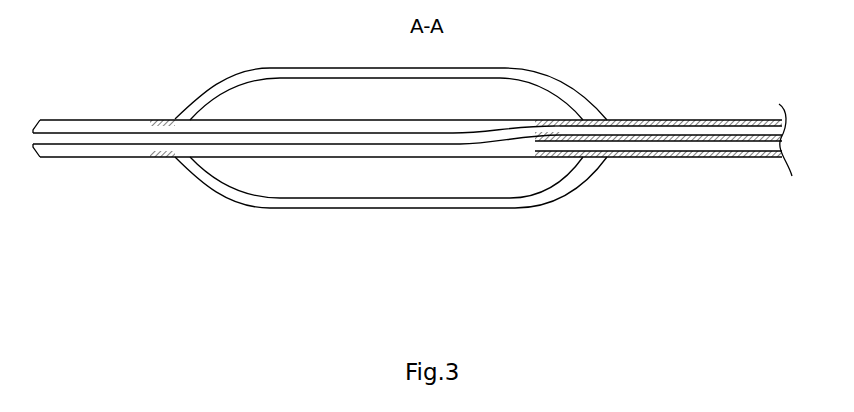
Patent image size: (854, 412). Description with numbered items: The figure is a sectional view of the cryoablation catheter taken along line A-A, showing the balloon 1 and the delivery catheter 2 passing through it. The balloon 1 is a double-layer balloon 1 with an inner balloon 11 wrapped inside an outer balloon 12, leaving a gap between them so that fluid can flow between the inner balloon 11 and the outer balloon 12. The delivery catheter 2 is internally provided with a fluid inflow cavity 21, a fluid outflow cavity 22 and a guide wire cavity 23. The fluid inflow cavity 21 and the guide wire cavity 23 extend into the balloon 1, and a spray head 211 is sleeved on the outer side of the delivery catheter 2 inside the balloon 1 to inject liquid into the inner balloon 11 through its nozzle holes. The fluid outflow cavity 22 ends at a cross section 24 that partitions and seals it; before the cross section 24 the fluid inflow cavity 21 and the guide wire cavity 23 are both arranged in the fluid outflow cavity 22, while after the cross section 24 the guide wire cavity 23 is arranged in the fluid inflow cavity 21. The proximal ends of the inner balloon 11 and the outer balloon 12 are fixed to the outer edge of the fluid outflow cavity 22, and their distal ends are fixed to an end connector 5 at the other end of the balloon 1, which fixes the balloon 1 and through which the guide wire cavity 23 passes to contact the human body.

The balloon 1 is at (391, 198).
The inner balloon 11 is at (300, 200).
The outer balloon 12 is at (222, 200).
The delivery catheter 2 is at (426, 219).
The fluid inflow cavity 21 is at (372, 158).
The spray head 211 is at (447, 158).
The fluid outflow cavity 22 is at (633, 158).
The guide wire cavity 23 is at (88, 160).
The cross section 24 is at (540, 158).
The end connector 5 is at (47, 160).